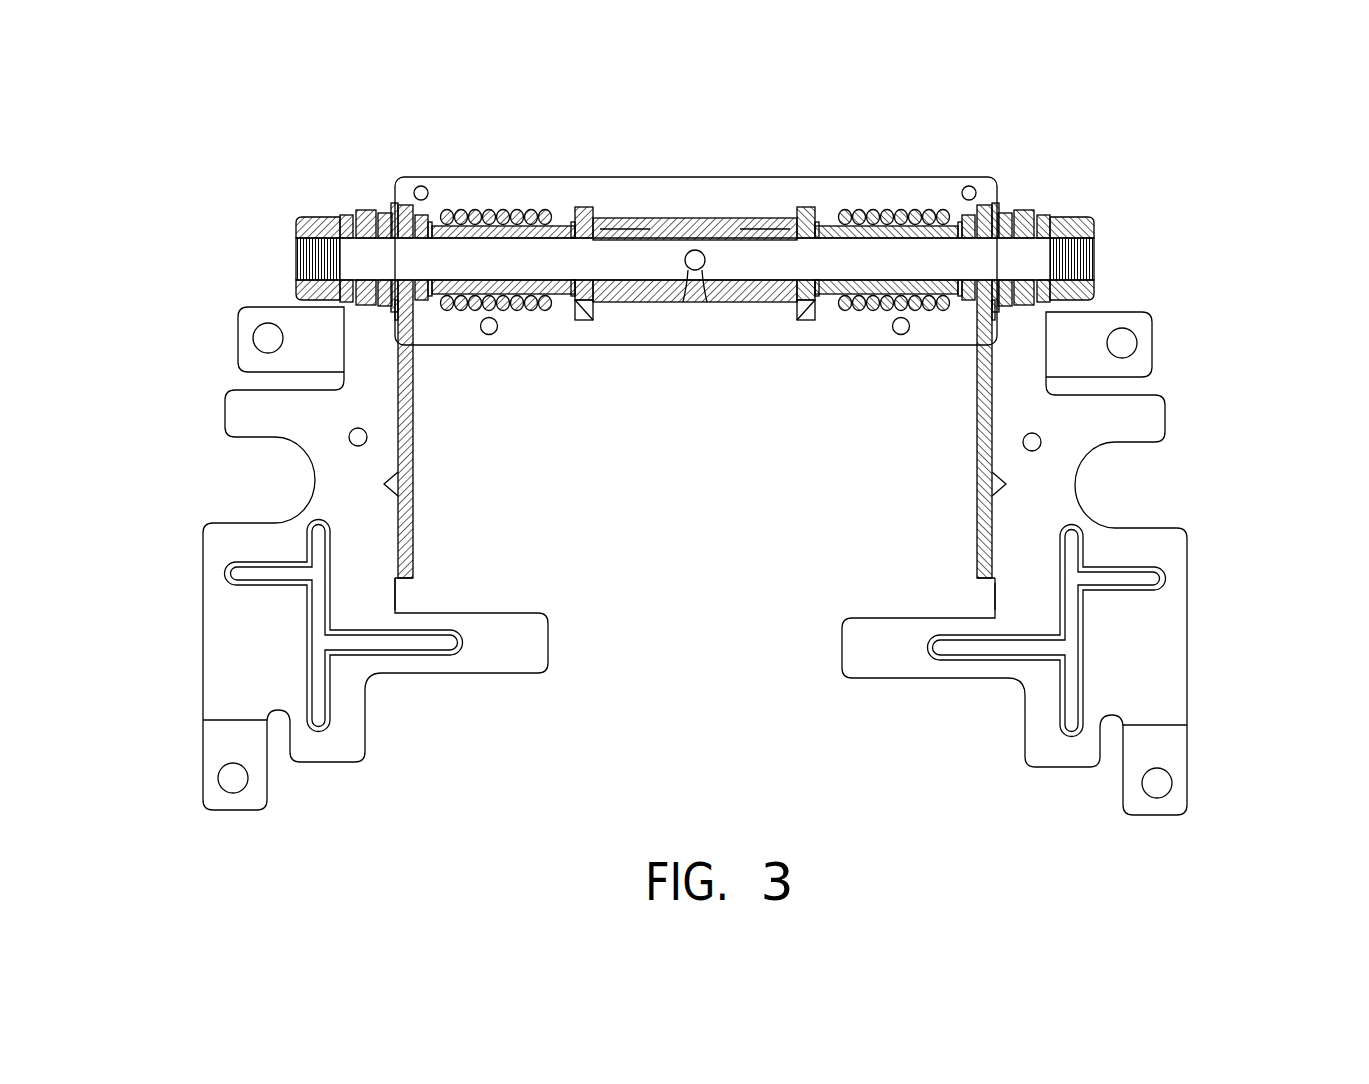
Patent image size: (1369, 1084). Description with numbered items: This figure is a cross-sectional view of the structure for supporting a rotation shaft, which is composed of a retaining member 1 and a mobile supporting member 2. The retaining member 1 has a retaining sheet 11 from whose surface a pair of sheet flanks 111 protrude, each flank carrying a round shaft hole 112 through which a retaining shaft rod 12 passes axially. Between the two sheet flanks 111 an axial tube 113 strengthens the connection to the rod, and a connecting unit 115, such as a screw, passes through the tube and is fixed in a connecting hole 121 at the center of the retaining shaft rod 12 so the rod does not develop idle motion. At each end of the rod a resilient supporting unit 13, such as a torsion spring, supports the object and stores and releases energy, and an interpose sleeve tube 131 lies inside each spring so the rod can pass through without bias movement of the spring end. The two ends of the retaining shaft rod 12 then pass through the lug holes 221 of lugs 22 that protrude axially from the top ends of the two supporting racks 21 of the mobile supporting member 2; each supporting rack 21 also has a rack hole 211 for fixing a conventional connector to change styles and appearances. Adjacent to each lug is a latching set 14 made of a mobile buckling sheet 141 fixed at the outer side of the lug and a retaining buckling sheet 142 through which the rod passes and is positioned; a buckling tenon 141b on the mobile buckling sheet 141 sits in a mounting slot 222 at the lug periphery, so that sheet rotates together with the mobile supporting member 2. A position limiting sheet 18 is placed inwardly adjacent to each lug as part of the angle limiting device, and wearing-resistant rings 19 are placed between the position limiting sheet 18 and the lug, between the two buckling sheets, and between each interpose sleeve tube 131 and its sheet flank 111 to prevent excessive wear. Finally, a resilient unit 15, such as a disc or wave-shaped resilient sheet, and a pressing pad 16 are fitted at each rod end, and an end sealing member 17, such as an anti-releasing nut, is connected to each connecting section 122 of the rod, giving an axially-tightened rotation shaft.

The retaining member 1 is at (712, 158).
The retaining sheet 11 is at (798, 182).
The sheet flanks 111 is at (578, 312).
The shaft hole 112 is at (630, 228).
The axial tube 113 is at (758, 222).
The connecting unit 115 is at (703, 300).
The retaining shaft rod 12 is at (653, 257).
The connecting hole 121 is at (695, 272).
The connecting sections 122 is at (312, 262).
The resilient supporting unit 13 is at (528, 307).
The interpose sleeve tube 131 is at (517, 228).
The latching set 14 is at (383, 185).
The mobile buckling sheet 141 is at (390, 210).
The buckling tenon 141b is at (397, 327).
The retaining buckling sheet 142 is at (356, 213).
The resilient unit 15 is at (353, 213).
The pressing pad 16 is at (338, 213).
The end sealing member 17 is at (300, 227).
The position limiting sheet 18 is at (436, 302).
The wearing-resistant ring 19 is at (430, 215).
The mobile supporting member 2 is at (1252, 412).
The supporting racks 21 is at (230, 640).
The rack hole 211 is at (270, 340).
The lugs 22 is at (405, 205).
The lug hole 221 is at (465, 213).
The mounting slot 222 is at (414, 330).